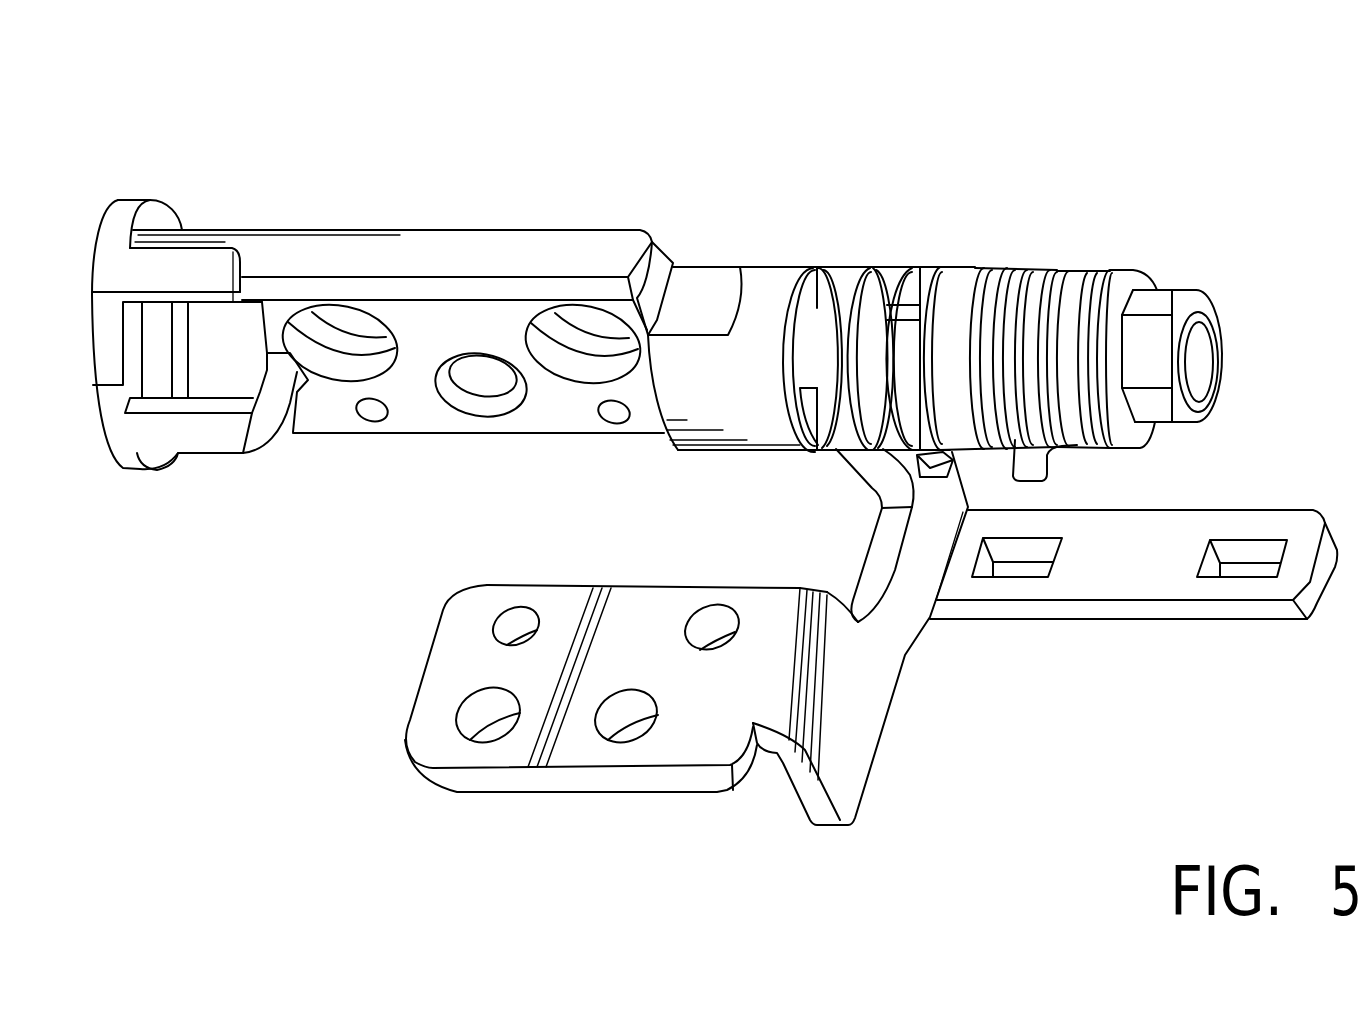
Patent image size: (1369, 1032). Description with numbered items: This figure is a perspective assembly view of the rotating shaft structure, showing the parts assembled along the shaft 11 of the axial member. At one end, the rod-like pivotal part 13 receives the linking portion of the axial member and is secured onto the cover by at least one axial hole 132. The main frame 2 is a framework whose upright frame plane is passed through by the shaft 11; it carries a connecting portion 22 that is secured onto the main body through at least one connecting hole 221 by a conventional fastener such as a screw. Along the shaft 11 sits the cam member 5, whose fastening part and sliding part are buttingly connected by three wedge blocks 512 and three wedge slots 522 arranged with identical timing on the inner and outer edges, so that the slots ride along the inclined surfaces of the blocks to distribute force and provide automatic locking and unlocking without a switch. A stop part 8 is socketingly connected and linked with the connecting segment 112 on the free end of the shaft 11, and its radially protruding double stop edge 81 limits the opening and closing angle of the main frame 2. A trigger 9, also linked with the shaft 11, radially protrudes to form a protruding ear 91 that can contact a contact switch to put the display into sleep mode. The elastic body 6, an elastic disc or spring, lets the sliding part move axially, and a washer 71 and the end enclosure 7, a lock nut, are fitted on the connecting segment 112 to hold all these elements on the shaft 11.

The main frame 2 is at (870, 712).
The connecting portion 22 is at (468, 628).
The connecting hole 221 is at (493, 727).
The rod-like pivotal part 13 is at (345, 423).
The axial hole 132 is at (487, 387).
The cam member 5 is at (994, 269).
The wedge block 512 is at (927, 268).
The wedge slot 522 is at (973, 268).
The elastic body 6 is at (995, 293).
The end enclosure 7 is at (1167, 298).
The washer 71 is at (1112, 278).
The stop part 8 is at (817, 267).
The double stop edge 81 is at (812, 445).
The trigger 9 is at (1043, 267).
The protruding ear 91 is at (1033, 458).
The shaft 11 is at (1200, 367).
The connecting segment 112 is at (1217, 317).